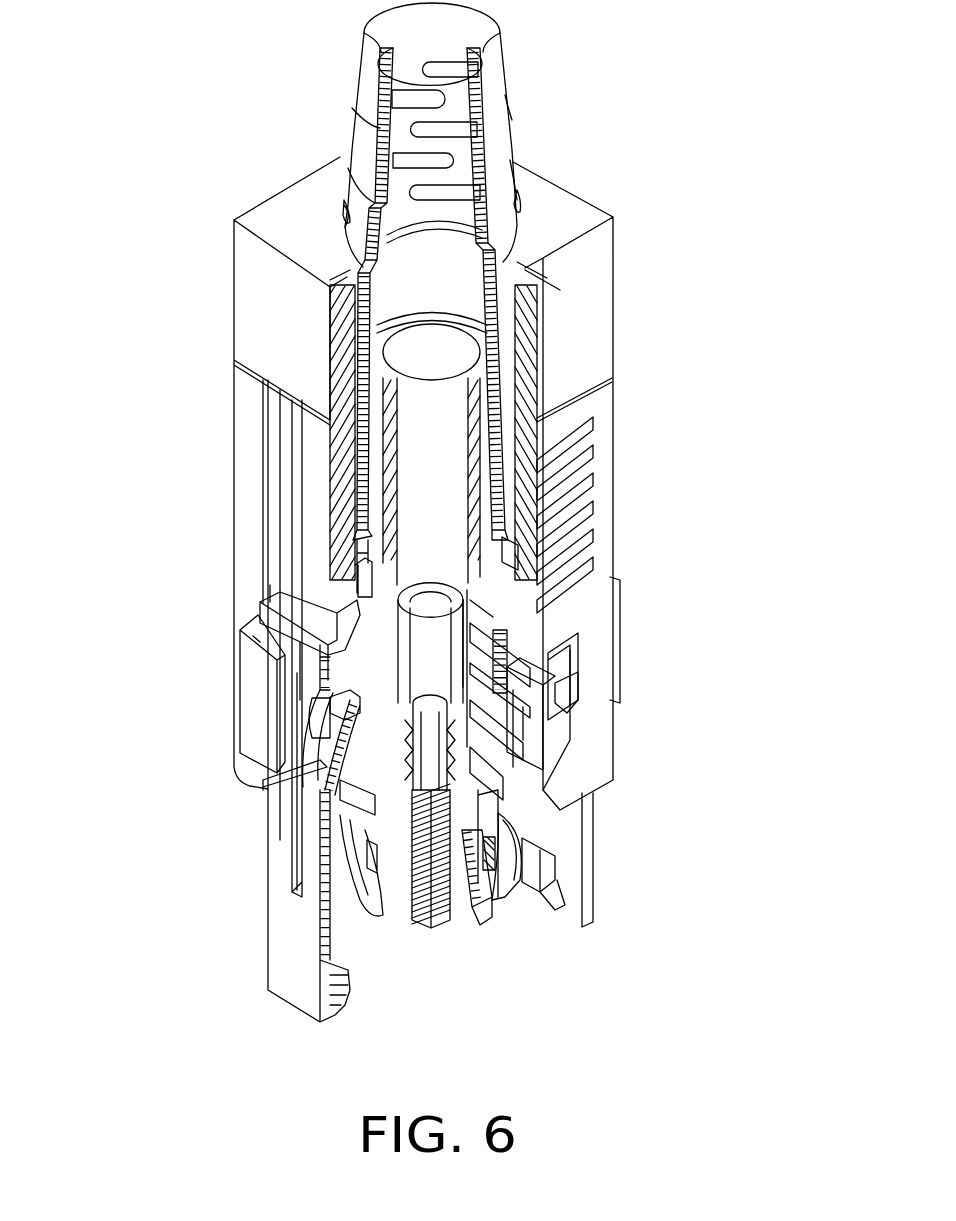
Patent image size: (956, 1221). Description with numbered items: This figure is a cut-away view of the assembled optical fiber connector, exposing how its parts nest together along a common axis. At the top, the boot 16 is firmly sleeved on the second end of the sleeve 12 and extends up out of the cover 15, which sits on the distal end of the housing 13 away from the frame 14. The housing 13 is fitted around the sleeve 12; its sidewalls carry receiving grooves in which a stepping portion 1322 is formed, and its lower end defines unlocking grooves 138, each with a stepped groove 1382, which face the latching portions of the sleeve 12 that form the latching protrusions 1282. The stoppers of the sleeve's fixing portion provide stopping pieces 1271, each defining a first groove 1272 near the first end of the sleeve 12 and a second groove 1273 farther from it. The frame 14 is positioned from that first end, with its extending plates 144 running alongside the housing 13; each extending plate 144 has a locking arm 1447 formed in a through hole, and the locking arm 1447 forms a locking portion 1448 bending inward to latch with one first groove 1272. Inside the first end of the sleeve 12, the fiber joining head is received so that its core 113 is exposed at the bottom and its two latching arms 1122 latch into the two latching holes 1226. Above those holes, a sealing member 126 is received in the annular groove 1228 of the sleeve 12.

The boot 16 is at (373, 85).
The cover 15 is at (585, 333).
The housing 13 is at (600, 492).
The sleeve 12 is at (487, 592).
The frame 14 is at (276, 637).
The second groove 1273 is at (355, 619).
The first groove 1272 is at (341, 700).
The stepping portion 1322 is at (316, 727).
The locking portion 1448 is at (294, 782).
The stopping piece 1271 is at (363, 796).
The locking arm 1447 is at (312, 857).
The extending plate 144 is at (298, 937).
The core 113 is at (440, 927).
The latching hole 1226 is at (502, 910).
The unlocking groove 138 is at (550, 663).
The stepped groove 1382 is at (570, 700).
The latching protrusion 1282 is at (553, 737).
The sealing member 126 is at (520, 833).
The annular groove 1228 is at (550, 877).
The latching arm 1122 is at (493, 908).